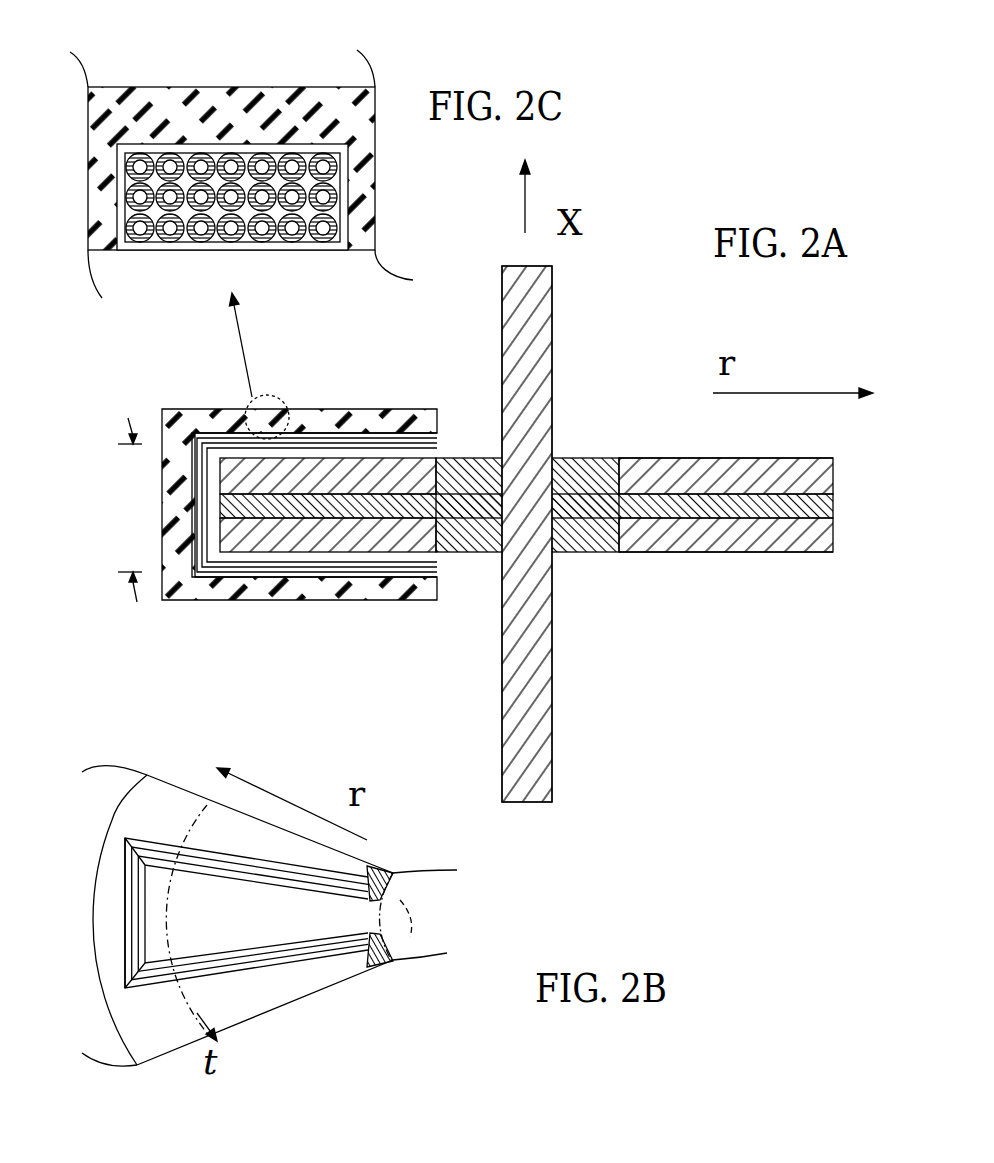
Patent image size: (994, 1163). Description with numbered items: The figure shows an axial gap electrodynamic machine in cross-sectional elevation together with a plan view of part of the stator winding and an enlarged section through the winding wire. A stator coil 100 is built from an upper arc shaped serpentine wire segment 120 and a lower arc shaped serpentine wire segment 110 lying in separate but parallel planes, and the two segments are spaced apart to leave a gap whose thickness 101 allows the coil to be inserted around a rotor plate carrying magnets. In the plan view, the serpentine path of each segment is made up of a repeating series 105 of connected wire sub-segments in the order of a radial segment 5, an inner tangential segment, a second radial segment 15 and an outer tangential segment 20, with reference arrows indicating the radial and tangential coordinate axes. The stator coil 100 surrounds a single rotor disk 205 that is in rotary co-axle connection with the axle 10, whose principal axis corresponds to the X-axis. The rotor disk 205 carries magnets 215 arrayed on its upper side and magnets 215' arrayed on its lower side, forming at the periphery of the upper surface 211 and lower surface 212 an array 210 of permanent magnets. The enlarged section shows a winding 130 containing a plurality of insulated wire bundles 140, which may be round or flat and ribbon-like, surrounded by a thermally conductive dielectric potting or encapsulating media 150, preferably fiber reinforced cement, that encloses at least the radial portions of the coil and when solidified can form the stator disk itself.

In FIG. 2B, the radial segment 5 is at (277, 957).
In FIG. 2A, the axle 10 is at (543, 306).
In FIG. 2B, the second radial segment 15 is at (254, 869).
In FIG. 2B, the outer tangential segment 20 is at (140, 933).
In FIG. 2A, the stator coil 100 is at (257, 495).
In FIG. 2A, the gap thickness 101 is at (121, 510).
In FIG. 2B, the repeating series of connected wire sub-segments 105 is at (472, 877).
In FIG. 2A, the lower arc shaped serpentine wire segment 110 is at (355, 613).
In FIG. 2A, the upper arc shaped serpentine wire segment 120 is at (375, 388).
In FIG. 2C, the winding 130 is at (238, 58).
In FIG. 2C, the insulated wire bundles 140 is at (327, 163).
In FIG. 2C, the thermally conductive dielectric potting or encapsulating media 150 is at (153, 107).
In FIG. 2A, the thermally conductive dielectric potting or encapsulating media 150 is at (323, 417).
In FIG. 2A, the rotor disk 205 is at (600, 440).
In FIG. 2A, the array of permanent magnets 210 is at (573, 480).
In FIG. 2A, the upper surface 211 is at (788, 446).
In FIG. 2A, the lower surface 212 is at (802, 565).
In FIG. 2A, the magnets 215 is at (526, 476).
In FIG. 2A, the magnets 215' is at (526, 535).